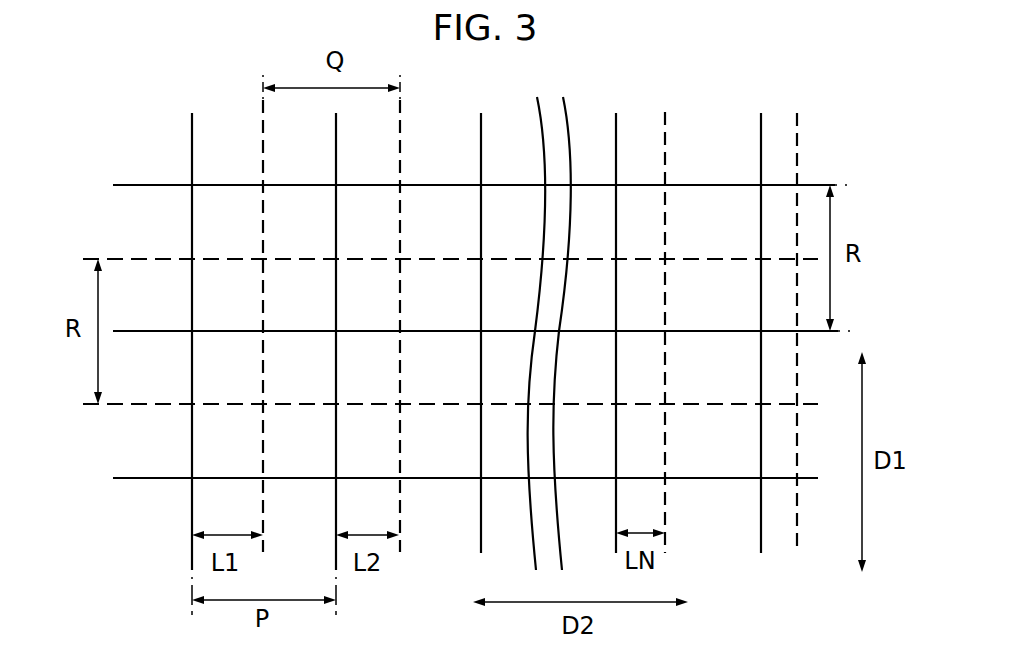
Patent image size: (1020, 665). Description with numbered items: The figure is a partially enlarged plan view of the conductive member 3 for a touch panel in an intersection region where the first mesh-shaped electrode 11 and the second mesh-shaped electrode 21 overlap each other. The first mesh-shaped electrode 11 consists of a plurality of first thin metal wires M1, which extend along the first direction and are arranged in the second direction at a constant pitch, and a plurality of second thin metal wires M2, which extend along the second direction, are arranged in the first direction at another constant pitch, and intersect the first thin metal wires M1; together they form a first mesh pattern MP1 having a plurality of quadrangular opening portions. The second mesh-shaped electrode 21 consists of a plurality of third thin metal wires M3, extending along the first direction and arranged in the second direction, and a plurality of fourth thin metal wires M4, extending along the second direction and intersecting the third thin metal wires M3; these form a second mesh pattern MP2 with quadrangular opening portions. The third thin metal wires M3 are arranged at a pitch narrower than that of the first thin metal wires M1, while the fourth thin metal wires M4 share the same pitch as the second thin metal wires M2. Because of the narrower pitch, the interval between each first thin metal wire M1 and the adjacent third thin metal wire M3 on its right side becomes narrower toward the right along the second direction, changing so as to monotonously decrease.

The conductive member 3 is at (838, 110).
The first thin metal wires M1 is at (190, 140).
The second thin metal wires M2 is at (145, 184).
The third thin metal wires M3 is at (262, 139).
The fourth thin metal wires M4 is at (145, 258).
The first mesh pattern MP1 is at (141, 479).
The second mesh pattern MP2 is at (140, 411).
The first mesh-shaped electrode 11 is at (760, 140).
The second mesh-shaped electrode 21 is at (664, 139).